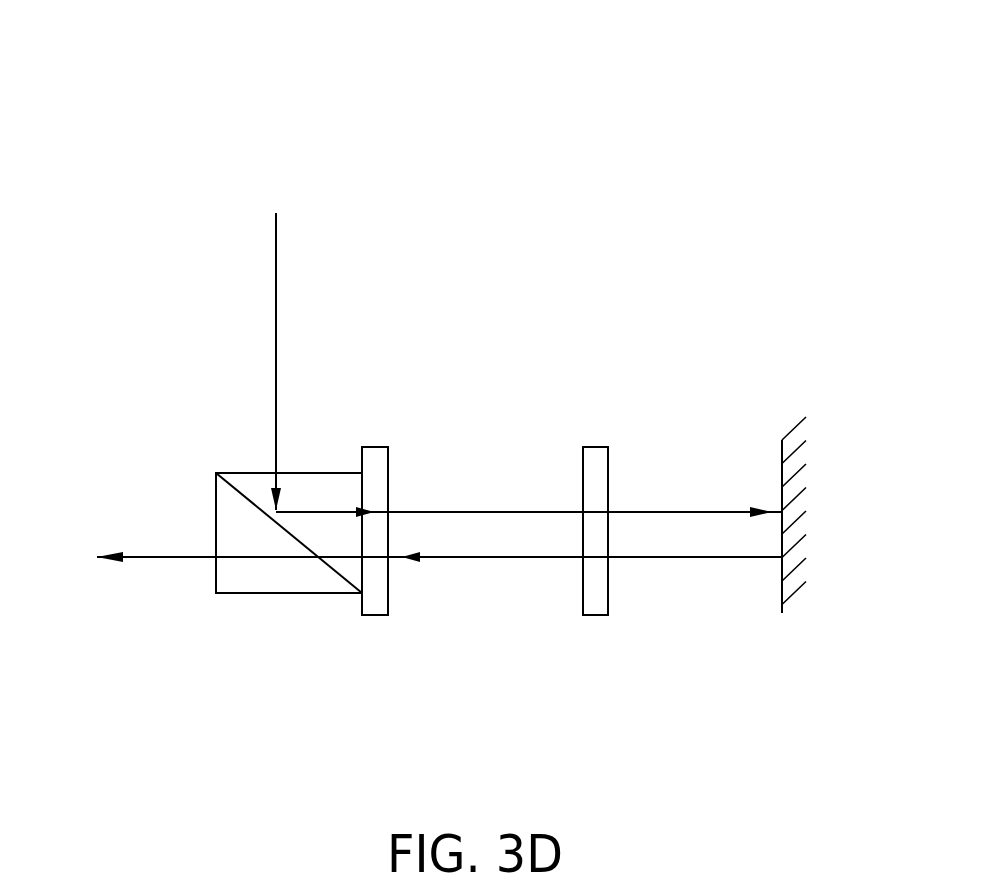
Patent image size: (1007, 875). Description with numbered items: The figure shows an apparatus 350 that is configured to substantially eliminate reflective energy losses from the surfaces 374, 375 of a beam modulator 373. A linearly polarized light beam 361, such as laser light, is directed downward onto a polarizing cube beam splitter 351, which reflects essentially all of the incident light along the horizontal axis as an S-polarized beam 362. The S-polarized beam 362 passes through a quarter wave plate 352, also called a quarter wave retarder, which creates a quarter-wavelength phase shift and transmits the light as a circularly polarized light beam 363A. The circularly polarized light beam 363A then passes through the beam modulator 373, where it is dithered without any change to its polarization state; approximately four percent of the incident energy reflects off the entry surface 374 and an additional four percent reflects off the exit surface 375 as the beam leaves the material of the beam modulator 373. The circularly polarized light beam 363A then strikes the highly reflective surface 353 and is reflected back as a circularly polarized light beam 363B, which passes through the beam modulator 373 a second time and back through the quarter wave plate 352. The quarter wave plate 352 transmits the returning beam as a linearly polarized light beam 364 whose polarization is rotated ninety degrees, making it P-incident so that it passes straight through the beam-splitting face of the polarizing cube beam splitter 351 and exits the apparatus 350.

The apparatus 350 is at (193, 88).
The linearly polarized light beam 361 is at (275, 281).
The polarizing cube beam splitter 351 is at (260, 488).
The S-polarized beam 362 is at (330, 512).
The quarter wave plate 352 is at (378, 478).
The circularly polarized light beam 363A is at (695, 512).
The surface of beam modulator 374 is at (582, 476).
The beam modulator 373 is at (594, 455).
The surface of beam modulator 375 is at (608, 585).
The highly reflective surface 353 is at (782, 613).
The circularly polarized light beam 363B is at (497, 557).
The linearly polarized light beam 364 is at (167, 558).